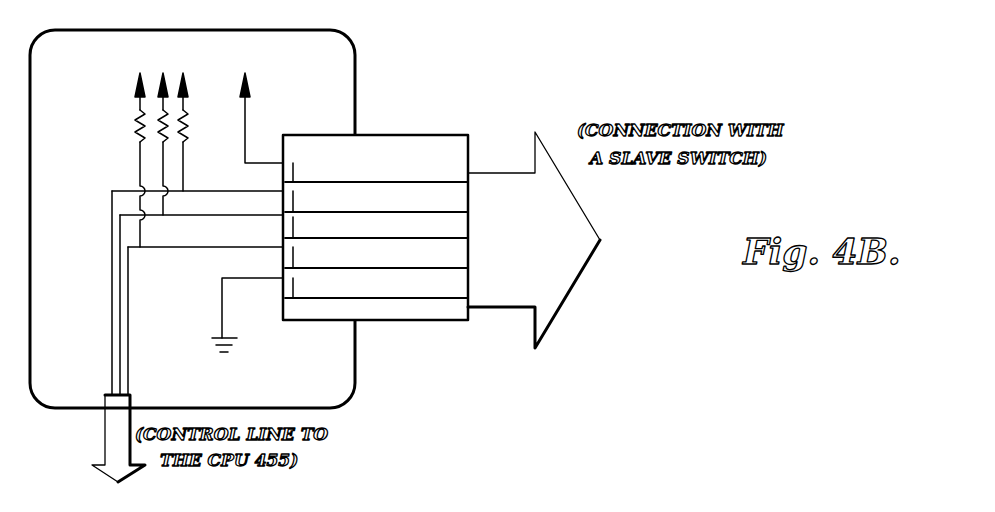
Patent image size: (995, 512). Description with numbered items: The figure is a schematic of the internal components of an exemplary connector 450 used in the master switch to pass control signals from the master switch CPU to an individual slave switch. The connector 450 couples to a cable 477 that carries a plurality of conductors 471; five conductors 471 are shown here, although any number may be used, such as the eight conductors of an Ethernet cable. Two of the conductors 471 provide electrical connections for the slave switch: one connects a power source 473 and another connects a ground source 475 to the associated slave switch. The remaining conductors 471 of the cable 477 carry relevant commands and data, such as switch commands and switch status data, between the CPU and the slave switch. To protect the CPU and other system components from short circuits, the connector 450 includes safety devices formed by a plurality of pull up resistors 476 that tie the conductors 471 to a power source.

The connector 450 is at (400, 78).
The conductors 471 is at (415, 238).
The power source 473 is at (246, 120).
The ground source 475 is at (248, 280).
The pull up resistors 476 is at (178, 110).
The cable 477 is at (370, 322).